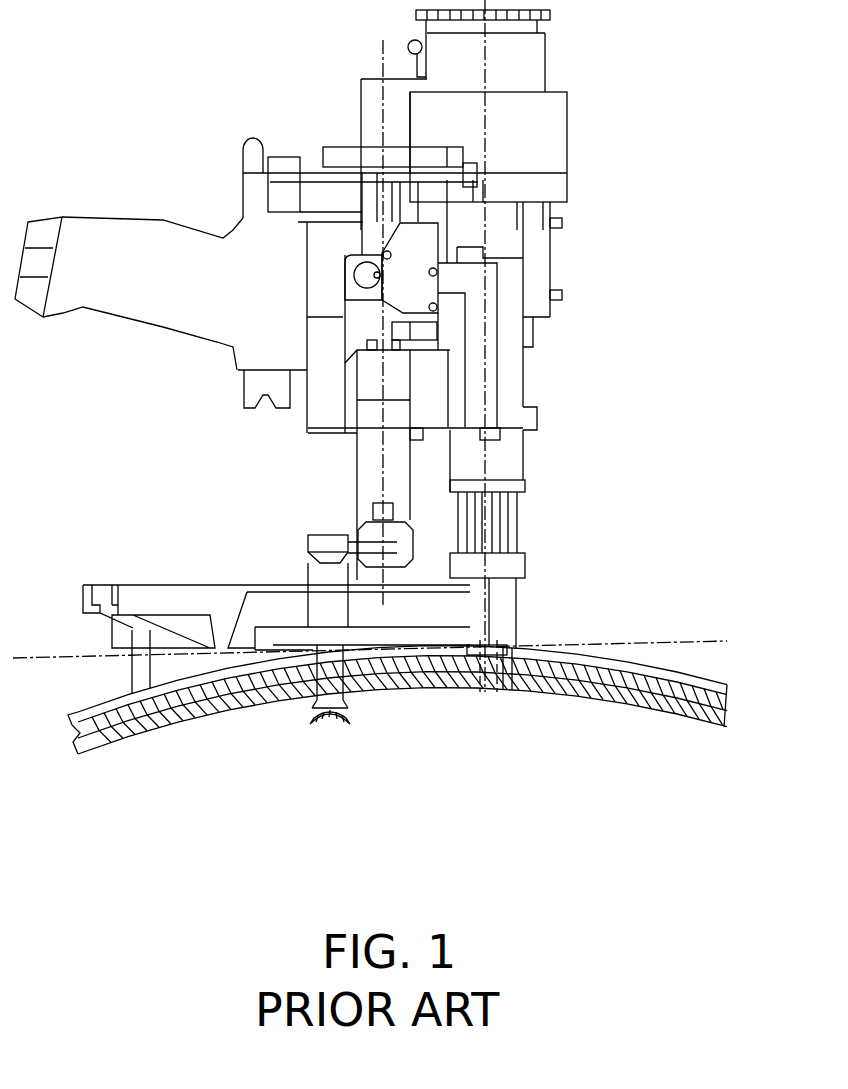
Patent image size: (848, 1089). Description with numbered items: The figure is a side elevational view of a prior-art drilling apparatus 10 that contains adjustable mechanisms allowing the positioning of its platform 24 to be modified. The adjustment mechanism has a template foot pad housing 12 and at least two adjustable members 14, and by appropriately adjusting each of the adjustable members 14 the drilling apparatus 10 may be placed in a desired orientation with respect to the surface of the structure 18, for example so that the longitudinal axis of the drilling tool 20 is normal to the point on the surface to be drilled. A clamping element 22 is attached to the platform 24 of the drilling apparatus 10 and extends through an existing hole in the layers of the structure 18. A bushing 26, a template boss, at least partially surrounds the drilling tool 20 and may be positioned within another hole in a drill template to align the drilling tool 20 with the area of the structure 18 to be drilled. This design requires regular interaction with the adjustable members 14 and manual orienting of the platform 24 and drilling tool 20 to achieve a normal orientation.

The drilling apparatus 10 is at (600, 98).
The template foot pad housing 12 is at (108, 648).
The adjustable members 14 is at (128, 686).
The structure 18 is at (748, 672).
The drilling tool 20 is at (493, 700).
The clamping element 22 is at (330, 730).
The platform 24 is at (508, 597).
The bushing 26 is at (508, 660).